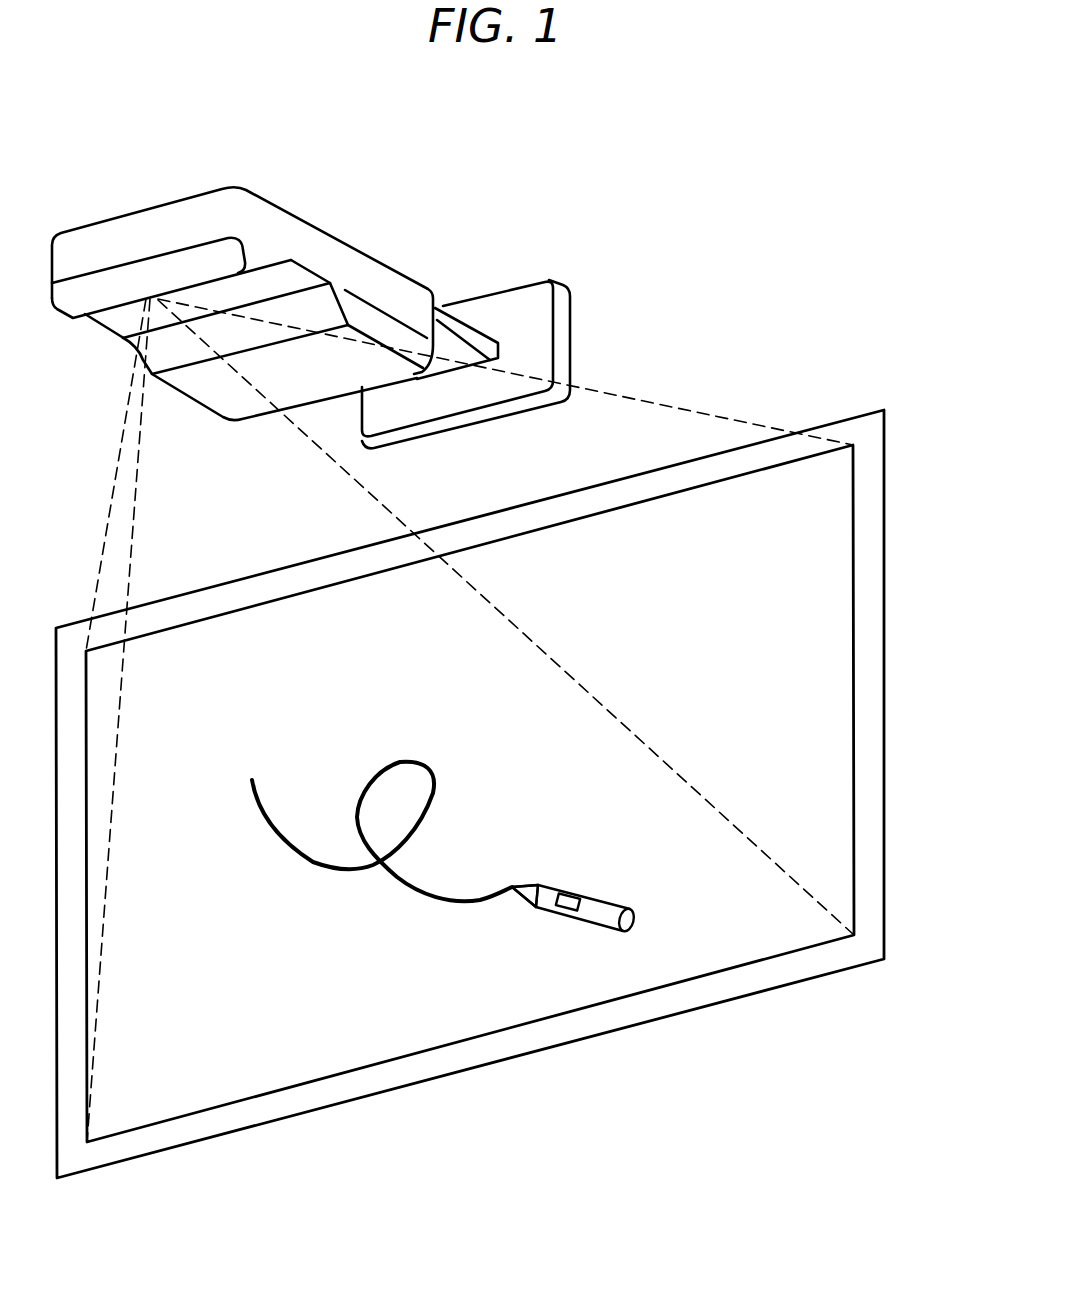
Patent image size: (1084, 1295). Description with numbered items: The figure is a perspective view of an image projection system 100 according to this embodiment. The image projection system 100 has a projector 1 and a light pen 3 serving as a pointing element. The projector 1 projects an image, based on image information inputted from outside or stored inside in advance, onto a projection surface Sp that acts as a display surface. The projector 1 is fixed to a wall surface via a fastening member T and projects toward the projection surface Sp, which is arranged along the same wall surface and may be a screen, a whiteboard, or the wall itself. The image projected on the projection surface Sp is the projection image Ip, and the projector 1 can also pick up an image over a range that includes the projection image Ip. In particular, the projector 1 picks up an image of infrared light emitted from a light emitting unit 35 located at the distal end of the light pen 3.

The image projection system 100 is at (756, 129).
The projector 1 is at (149, 209).
The fastening member T is at (475, 333).
The projection surface Sp is at (863, 433).
The projection image Ip is at (835, 562).
The light pen 3 is at (613, 910).
The light emitting unit 35 is at (522, 885).